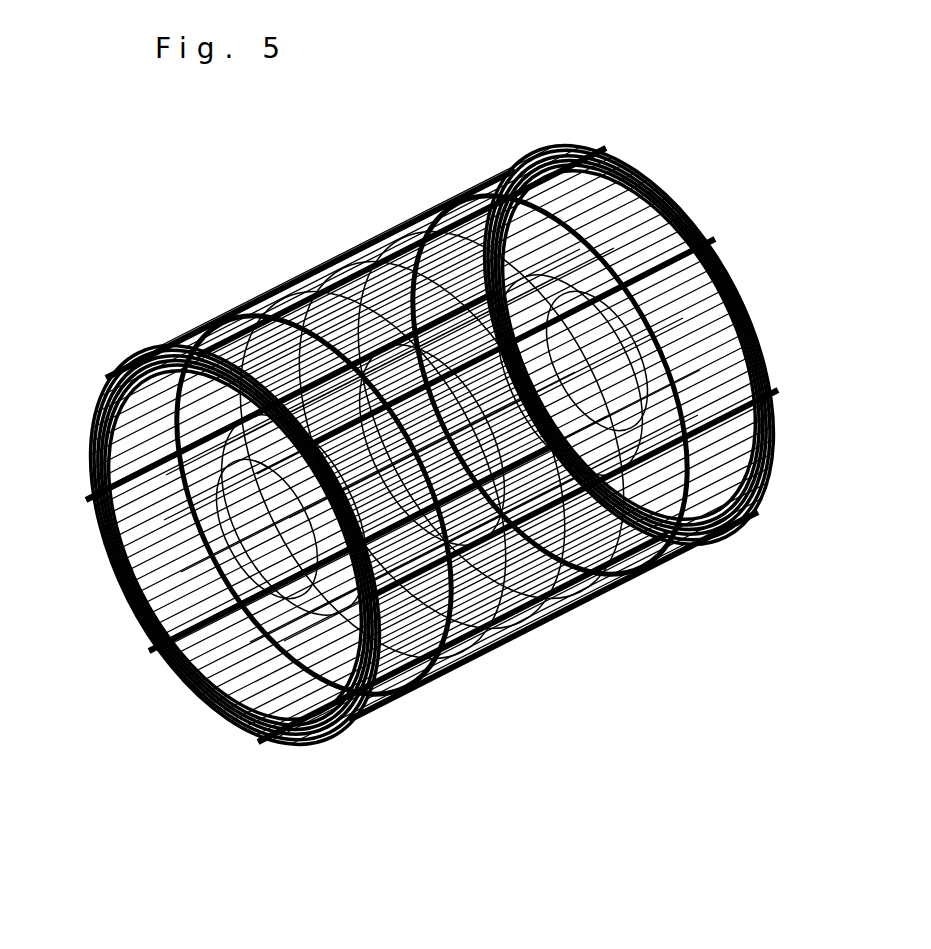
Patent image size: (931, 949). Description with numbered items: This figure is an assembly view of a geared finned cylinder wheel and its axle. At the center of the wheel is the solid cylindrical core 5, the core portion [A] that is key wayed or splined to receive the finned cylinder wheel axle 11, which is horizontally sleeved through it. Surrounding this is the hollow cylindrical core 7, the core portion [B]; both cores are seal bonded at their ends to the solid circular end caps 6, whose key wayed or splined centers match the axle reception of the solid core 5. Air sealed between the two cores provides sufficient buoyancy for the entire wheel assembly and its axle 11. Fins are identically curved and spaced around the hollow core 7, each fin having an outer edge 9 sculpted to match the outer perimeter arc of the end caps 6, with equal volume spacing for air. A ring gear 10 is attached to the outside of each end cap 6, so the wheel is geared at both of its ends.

The solid cylindrical core 5 is at (200, 520).
The solid circular end caps 6 is at (195, 333).
The hollow cylindrical core 7 is at (335, 752).
The outer edge of fin 9 is at (318, 270).
The ring gear 10 is at (578, 150).
The finned cylinder wheel axle 11 is at (232, 570).